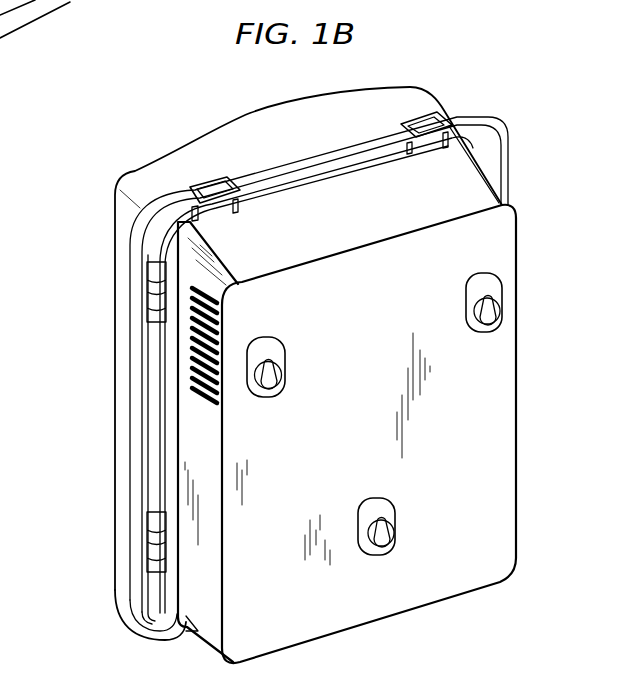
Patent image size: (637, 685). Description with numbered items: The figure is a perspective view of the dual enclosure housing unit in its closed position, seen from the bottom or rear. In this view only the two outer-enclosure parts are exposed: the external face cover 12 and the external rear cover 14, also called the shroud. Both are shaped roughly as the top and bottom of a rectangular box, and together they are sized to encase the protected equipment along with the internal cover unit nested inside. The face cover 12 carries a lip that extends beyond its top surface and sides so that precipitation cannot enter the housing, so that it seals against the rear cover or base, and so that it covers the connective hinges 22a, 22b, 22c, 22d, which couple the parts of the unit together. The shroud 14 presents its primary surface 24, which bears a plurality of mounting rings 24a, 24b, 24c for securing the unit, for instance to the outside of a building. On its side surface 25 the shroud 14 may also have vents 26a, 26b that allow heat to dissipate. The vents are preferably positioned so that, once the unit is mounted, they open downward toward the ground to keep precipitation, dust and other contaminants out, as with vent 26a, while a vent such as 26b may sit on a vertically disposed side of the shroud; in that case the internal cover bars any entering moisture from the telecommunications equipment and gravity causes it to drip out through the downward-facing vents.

The external face cover 12 is at (387, 100).
The external rear cover 14 is at (483, 420).
The connective hinge 22a is at (153, 299).
The connective hinge 22b is at (153, 545).
The connective hinge 22c is at (223, 182).
The connective hinge 22d is at (448, 140).
The primary surface 24 is at (307, 468).
The mounting ring 24a is at (500, 299).
The mounting ring 24b is at (274, 344).
The mounting ring 24c is at (390, 520).
The side surface 25 is at (458, 191).
The vent 26a is at (83, 0).
The vent 26b is at (186, 397).